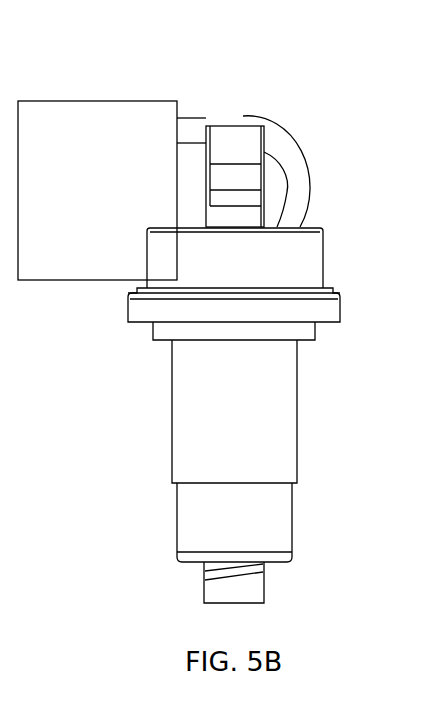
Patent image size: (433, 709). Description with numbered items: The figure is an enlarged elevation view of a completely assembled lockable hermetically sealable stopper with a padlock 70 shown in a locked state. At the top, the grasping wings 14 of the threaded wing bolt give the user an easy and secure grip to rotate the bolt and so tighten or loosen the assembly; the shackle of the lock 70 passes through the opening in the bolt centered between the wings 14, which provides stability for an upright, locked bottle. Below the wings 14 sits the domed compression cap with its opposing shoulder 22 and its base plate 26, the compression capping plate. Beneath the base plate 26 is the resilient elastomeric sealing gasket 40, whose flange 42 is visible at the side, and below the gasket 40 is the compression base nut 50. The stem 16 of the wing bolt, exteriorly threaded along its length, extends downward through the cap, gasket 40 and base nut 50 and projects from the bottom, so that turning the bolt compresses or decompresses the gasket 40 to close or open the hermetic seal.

The lock 70 is at (95, 122).
The wings 14 is at (265, 127).
The shoulder 22 is at (147, 267).
The base plate 26 is at (128, 311).
The flange 42 is at (317, 335).
The sealing gasket 40 is at (147, 422).
The compression base nut 50 is at (160, 518).
The stem section 16 is at (205, 586).